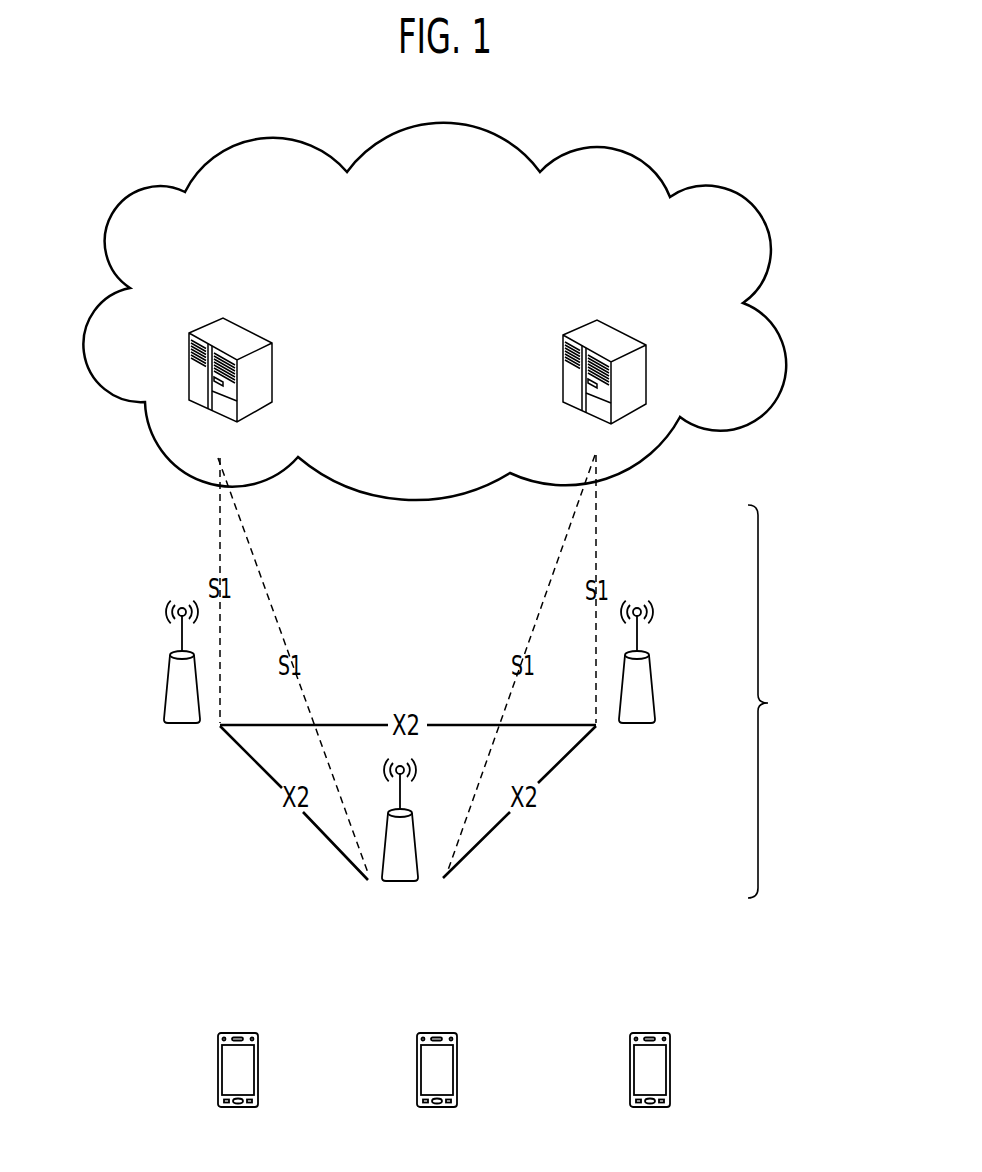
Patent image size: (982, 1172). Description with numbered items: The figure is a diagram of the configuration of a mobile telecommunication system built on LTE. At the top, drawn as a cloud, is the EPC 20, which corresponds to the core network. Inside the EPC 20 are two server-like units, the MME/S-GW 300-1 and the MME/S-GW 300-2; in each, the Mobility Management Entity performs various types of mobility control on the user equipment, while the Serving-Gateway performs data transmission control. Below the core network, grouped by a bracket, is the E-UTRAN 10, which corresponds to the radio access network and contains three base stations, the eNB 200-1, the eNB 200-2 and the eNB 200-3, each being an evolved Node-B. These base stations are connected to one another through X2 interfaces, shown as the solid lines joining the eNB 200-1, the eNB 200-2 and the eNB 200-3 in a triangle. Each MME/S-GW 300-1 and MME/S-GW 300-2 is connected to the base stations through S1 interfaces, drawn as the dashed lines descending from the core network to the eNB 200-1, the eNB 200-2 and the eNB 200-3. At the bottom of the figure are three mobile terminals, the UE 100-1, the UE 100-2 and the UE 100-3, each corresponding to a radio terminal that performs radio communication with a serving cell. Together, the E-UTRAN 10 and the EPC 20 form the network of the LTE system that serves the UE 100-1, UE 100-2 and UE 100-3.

The EPC 20 is at (648, 162).
The MME/S-GW 300-1 is at (250, 333).
The MME/S-GW 300-2 is at (620, 333).
The eNB 200-1 is at (168, 688).
The eNB 200-2 is at (418, 860).
The eNB 200-3 is at (650, 670).
The E-UTRAN 10 is at (811, 701).
The UE 100-1 is at (273, 1005).
The UE 100-2 is at (450, 1032).
The UE 100-3 is at (688, 1005).